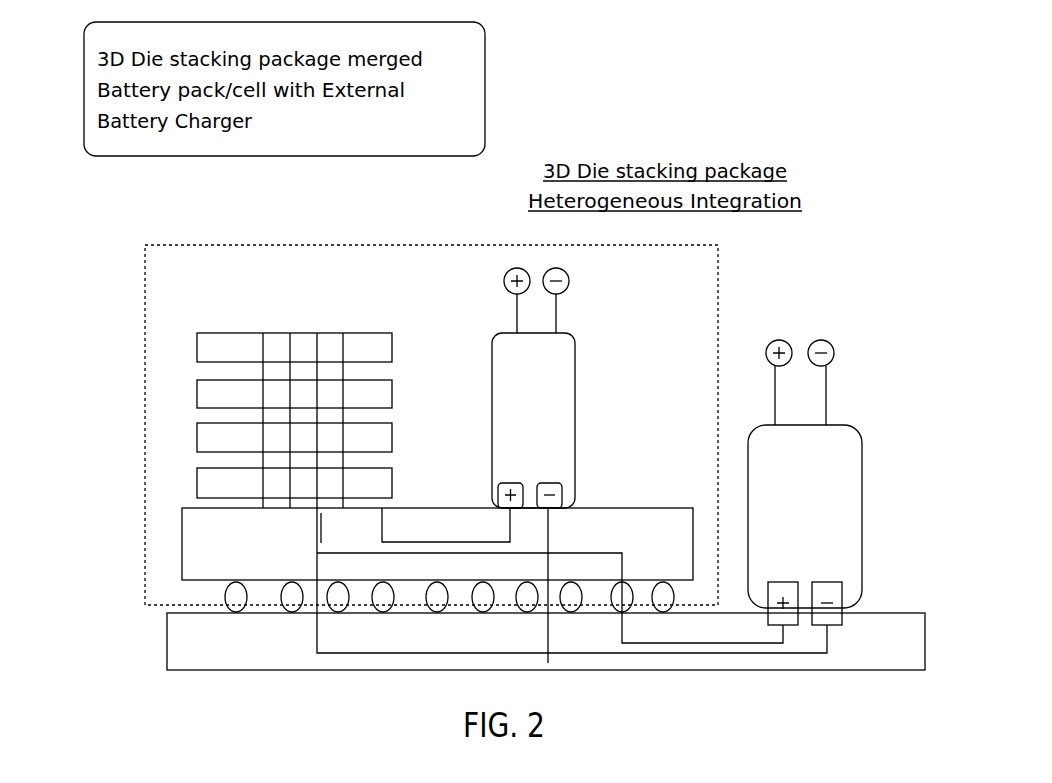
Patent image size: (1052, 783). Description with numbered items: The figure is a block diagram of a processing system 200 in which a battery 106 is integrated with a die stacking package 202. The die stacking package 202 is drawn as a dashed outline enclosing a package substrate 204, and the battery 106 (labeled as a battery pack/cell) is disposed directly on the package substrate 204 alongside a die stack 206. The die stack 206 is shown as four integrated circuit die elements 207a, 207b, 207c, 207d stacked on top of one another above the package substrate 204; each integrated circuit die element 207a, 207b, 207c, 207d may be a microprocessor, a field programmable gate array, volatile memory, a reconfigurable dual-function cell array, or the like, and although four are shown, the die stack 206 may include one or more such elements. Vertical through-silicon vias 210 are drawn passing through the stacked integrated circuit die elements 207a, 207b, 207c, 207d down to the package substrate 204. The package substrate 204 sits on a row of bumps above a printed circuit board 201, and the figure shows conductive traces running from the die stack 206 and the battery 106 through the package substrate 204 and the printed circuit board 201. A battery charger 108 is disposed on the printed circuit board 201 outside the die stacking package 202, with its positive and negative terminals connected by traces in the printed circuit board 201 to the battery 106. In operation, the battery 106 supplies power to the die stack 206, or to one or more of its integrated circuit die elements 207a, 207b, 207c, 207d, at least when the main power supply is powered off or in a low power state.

The processing system 200 is at (692, 52).
The die stacking package 202 is at (268, 245).
The printed circuit board 201 is at (167, 648).
The package substrate 204 is at (182, 548).
The die stack 206 is at (197, 490).
The integrated circuit die element 207a is at (392, 484).
The integrated circuit die element 207b is at (392, 440).
The integrated circuit die element 207c is at (392, 402).
The integrated circuit die element 207d is at (287, 333).
The through-silicon via (TSV) 210 is at (275, 370).
The battery 106 is at (575, 350).
The battery charger 108 is at (862, 437).